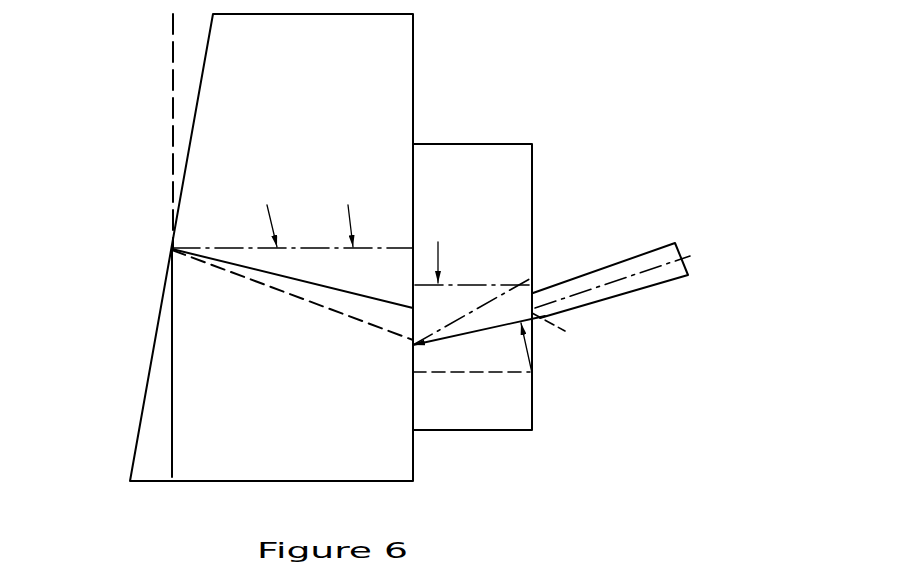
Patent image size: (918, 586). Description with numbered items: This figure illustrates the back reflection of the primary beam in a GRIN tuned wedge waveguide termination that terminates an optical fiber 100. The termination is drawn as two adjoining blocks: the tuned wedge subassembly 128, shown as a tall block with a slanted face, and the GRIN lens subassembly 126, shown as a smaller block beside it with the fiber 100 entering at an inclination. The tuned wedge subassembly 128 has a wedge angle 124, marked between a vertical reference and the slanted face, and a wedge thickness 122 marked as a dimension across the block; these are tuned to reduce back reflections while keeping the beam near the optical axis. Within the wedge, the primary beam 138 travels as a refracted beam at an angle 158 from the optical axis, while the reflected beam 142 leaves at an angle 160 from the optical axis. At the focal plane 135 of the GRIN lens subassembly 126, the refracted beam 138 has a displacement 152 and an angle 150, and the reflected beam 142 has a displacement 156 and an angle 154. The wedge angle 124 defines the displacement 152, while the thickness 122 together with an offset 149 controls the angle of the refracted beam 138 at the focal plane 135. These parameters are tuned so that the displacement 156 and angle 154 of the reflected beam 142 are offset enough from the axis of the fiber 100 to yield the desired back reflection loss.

The optical fiber 100 is at (675, 282).
The wedge thickness 122 is at (412, 453).
The wedge angle 124 is at (250, 60).
The GRIN lens subassembly 126 is at (500, 162).
The tuned wedge subassembly 128 is at (357, 80).
The focal plane 135 is at (535, 340).
The primary beam 138 is at (373, 295).
The reflected beam 142 is at (358, 318).
The offset 149 is at (415, 285).
The angle of the primary beam 150 is at (515, 282).
The displacement of the primary beam 152 is at (535, 278).
The angle of the reflected beam 154 is at (479, 330).
The displacement of the reflected beam 156 is at (528, 368).
The angle of the refracted beam from the optical axis 158 is at (347, 294).
The angle of the reflected beam from the optical axis 160 is at (268, 286).